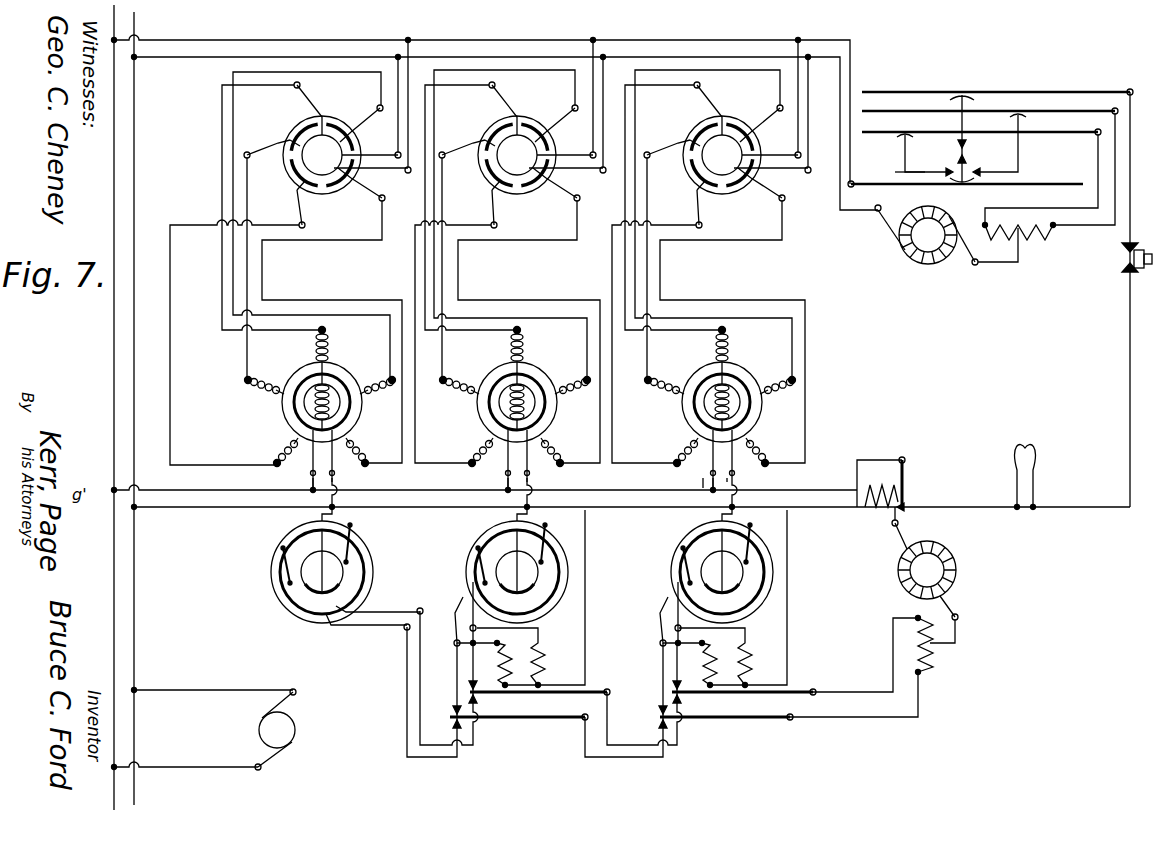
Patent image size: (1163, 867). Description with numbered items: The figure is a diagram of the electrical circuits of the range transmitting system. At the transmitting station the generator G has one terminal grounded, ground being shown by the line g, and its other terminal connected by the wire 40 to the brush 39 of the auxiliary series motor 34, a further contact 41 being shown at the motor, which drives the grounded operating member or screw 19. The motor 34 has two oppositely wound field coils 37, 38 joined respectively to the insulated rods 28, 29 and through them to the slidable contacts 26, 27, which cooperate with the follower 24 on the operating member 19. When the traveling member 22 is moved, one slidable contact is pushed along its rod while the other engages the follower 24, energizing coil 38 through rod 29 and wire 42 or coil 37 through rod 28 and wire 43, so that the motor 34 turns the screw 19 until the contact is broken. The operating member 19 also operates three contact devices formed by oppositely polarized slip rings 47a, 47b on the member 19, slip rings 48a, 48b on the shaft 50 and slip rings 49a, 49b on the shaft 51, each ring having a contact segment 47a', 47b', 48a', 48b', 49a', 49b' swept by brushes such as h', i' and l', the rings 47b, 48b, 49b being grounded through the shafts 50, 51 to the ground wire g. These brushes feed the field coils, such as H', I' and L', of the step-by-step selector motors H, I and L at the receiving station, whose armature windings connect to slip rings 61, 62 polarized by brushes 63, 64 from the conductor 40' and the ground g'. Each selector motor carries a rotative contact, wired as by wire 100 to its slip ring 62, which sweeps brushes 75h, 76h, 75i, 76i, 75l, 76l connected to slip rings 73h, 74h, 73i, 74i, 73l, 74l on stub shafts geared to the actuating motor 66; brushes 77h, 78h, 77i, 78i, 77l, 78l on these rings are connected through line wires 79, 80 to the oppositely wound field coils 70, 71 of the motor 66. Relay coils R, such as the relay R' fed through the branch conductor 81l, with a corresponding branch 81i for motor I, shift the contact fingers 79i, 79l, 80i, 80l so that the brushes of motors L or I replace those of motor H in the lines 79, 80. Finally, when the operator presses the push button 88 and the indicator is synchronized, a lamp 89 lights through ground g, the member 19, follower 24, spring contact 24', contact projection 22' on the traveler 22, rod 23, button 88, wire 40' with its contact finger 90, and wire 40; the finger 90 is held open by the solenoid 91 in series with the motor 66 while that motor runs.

The supply conductors g is at (482, 98).
The return conductors g' is at (622, 493).
The conductor bar 19 is at (1062, 184).
The contact arm 22 is at (976, 138).
The contact 22' is at (926, 153).
The bus bar 23 is at (897, 92).
The contact 24 is at (1000, 143).
The contact 24' is at (979, 149).
The contact 26 is at (1005, 172).
The contact 27 is at (925, 168).
The bus bar 28 is at (1062, 110).
The bus bar 29 is at (1048, 134).
The rotary switch 34 is at (918, 263).
The resistance 37 is at (1035, 242).
The tap conductor 38 is at (1005, 250).
The switch arm 39 is at (887, 228).
The conductor 40 is at (506, 296).
The conductor 40' is at (1109, 299).
The switch arm 41 is at (968, 264).
The conductor 42 is at (1098, 197).
The conductor 43 is at (1105, 230).
The controller segment 47a is at (342, 148).
The controller segment 47a' is at (329, 189).
The controller segment 47b is at (286, 176).
The controller segment 47b' is at (324, 118).
The controller segment 48a is at (522, 142).
The controller segment 48a' is at (540, 189).
The controller segment 48b is at (481, 176).
The controller segment 48b' is at (481, 119).
The controller segment 49a is at (727, 142).
The controller segment 49a' is at (745, 189).
The controller segment 49b is at (686, 176).
The controller segment 49b' is at (686, 119).
The conductor 50 is at (566, 146).
The conductor 51 is at (771, 146).
The motor field 61 is at (300, 392).
The armature coil 62 is at (330, 393).
The armature R is at (535, 390).
The motor lead 63 is at (311, 470).
The motor lead 64 is at (336, 470).
The rotary switch 66 is at (957, 570).
The resistance 70 is at (937, 668).
The switch arm 71 is at (960, 628).
The switch ring 73h is at (373, 585).
The switch ring 74h is at (365, 562).
The switch contact 75h is at (288, 570).
The switch contact 76h is at (356, 547).
The switch contact 77h is at (350, 627).
The switch contact 78h is at (398, 635).
The switch ring 73i is at (540, 572).
The switch ring 74i is at (545, 572).
The switch contact 75i is at (463, 552).
The switch contact 76i is at (559, 538).
The switch contact 77i is at (447, 614).
The switch contact 78i is at (459, 621).
The switch ring 73l is at (723, 576).
The switch ring 74l is at (745, 572).
The switch contact 75l is at (659, 565).
The switch contact 76l is at (777, 543).
The switch contact 77l is at (649, 614).
The switch contact 78l is at (662, 621).
The conductor 79 is at (406, 728).
The contact bar 79i is at (505, 724).
The contact bar 79l is at (712, 724).
The conductor 80 is at (421, 693).
The conductor 80i is at (568, 722).
The conductor 80l is at (783, 722).
The conductor 81i is at (585, 628).
The conductor 81l is at (788, 604).
The circuit breaker 88 is at (1125, 265).
The lamp 89 is at (1035, 455).
The switch 90 is at (912, 478).
The resistance 91 is at (880, 510).
The conductor 100 is at (742, 492).
The generator G is at (297, 726).
The motor H is at (335, 424).
The motor I is at (526, 424).
The motor L is at (732, 424).
The field coil H' is at (305, 344).
The field coil I' is at (502, 344).
The field coil L' is at (705, 344).
The controller contact h' is at (272, 206).
The controller contact i' is at (473, 205).
The controller contact l' is at (676, 205).
The resistance R' is at (723, 658).